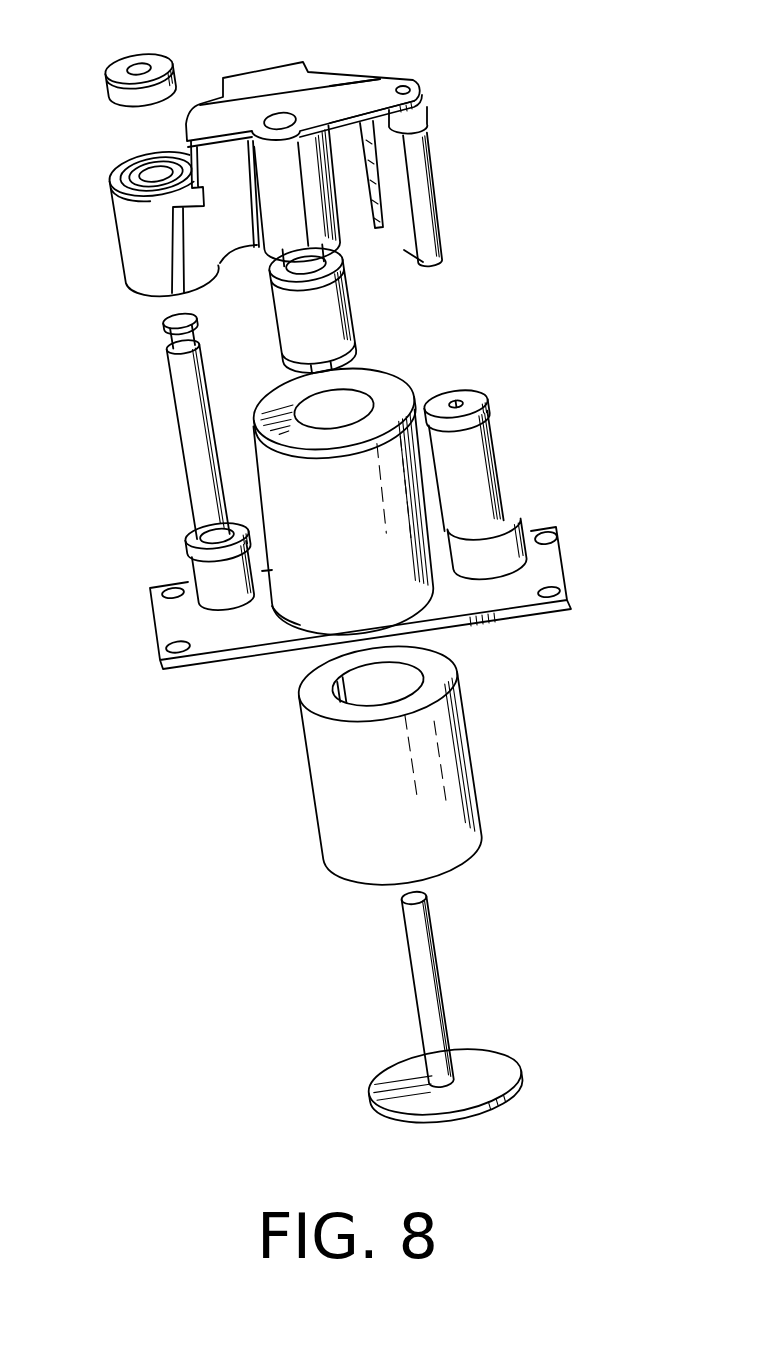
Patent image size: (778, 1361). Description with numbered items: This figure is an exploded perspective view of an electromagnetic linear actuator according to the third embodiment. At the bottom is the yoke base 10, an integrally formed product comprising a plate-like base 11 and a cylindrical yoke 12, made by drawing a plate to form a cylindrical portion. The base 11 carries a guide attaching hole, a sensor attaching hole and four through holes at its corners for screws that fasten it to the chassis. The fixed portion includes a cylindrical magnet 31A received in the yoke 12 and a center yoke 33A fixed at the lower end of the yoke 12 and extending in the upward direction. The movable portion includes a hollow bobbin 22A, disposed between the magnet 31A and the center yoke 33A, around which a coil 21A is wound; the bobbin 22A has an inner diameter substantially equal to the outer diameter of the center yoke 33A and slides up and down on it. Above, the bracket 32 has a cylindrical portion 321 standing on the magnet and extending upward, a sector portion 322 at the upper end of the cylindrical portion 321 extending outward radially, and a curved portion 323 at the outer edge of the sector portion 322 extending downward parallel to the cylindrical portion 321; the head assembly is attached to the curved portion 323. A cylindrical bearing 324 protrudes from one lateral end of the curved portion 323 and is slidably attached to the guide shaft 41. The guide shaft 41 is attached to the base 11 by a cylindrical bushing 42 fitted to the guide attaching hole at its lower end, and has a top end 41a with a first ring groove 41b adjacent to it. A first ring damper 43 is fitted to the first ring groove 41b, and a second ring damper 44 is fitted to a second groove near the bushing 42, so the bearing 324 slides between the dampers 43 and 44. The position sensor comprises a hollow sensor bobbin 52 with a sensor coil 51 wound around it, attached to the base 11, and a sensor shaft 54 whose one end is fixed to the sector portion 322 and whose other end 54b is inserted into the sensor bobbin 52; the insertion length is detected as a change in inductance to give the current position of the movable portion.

The first ring damper 43 is at (148, 53).
The bracket 32 is at (320, 87).
The sector portion 322 is at (347, 83).
The sensor shaft 54 is at (423, 150).
The other end of sensor shaft 54b is at (437, 251).
The curved portion 323 is at (366, 180).
The cylindrical portion 321 is at (310, 195).
The cylindrical bearing 324 is at (138, 228).
The coil 21A is at (348, 310).
The hollow bobbin 22A is at (364, 367).
The yoke base 10 is at (433, 593).
The cylindrical yoke 12 is at (313, 595).
The base 11 is at (513, 587).
The second ring damper 44 is at (197, 557).
The cylindrical bushing 42 is at (213, 602).
The guide shaft 41 is at (190, 417).
The first ring groove 41b is at (170, 338).
The top end 41a is at (177, 315).
The sensor bobbin 52 is at (490, 415).
The sensor coil 51 is at (487, 463).
The cylindrical magnet 31A is at (443, 760).
The center yoke 33A is at (427, 978).